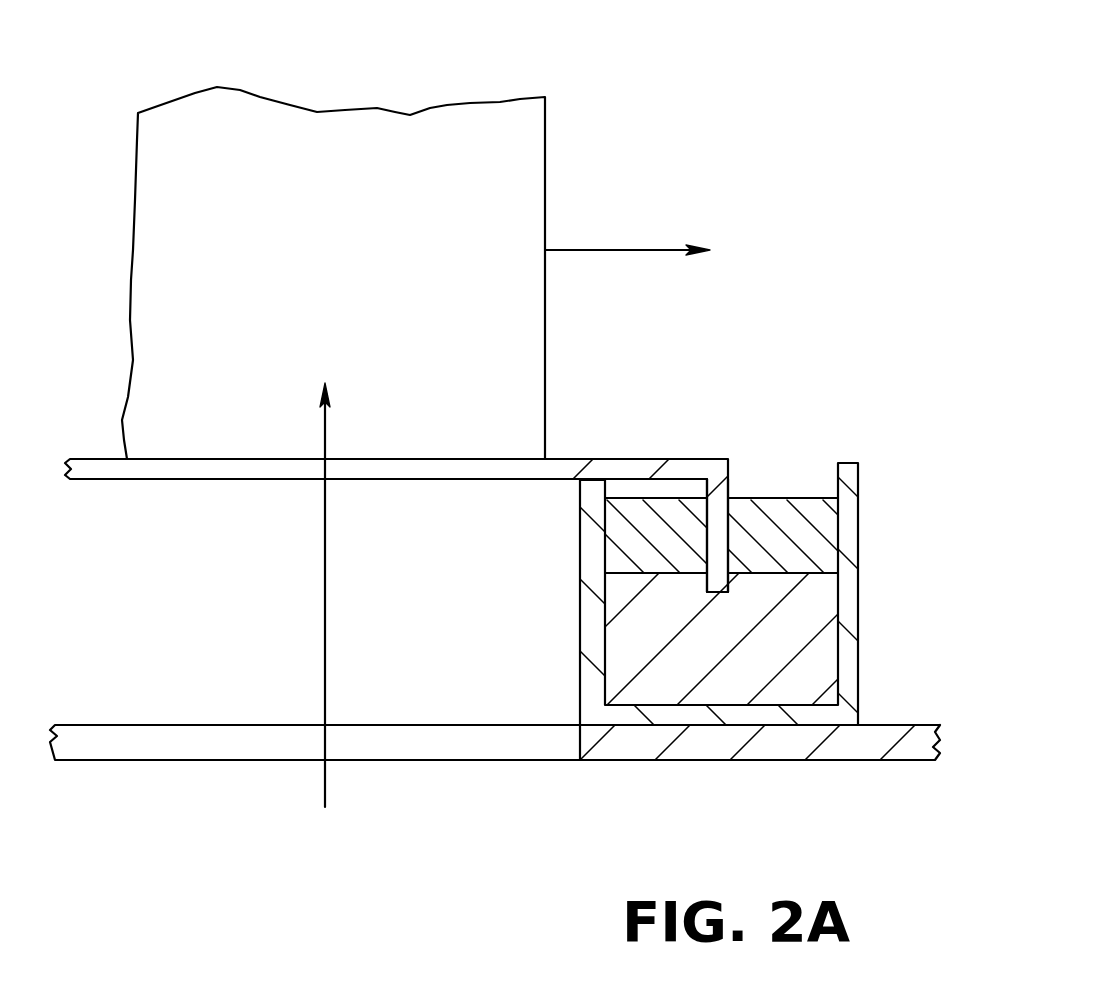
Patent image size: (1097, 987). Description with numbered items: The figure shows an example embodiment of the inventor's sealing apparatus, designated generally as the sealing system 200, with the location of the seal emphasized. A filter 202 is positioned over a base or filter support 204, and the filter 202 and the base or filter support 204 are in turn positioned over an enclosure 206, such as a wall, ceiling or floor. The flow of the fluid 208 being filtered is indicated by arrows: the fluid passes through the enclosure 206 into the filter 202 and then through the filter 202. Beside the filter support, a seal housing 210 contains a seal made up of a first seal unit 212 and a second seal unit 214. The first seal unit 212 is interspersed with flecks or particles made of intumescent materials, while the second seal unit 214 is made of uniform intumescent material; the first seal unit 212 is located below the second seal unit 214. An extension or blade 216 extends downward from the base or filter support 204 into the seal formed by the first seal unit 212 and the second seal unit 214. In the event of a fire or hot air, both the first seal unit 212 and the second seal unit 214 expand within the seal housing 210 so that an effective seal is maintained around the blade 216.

The sealing system 200 is at (673, 60).
The filter 202 is at (368, 258).
The base or filter support 204 is at (633, 460).
The enclosure 206 is at (683, 763).
The flow of the fluid 208 is at (627, 247).
The seal housing 210 is at (862, 670).
The first seal unit 212 is at (808, 613).
The second seal unit 214 is at (817, 547).
The extension or blade 216 is at (729, 516).